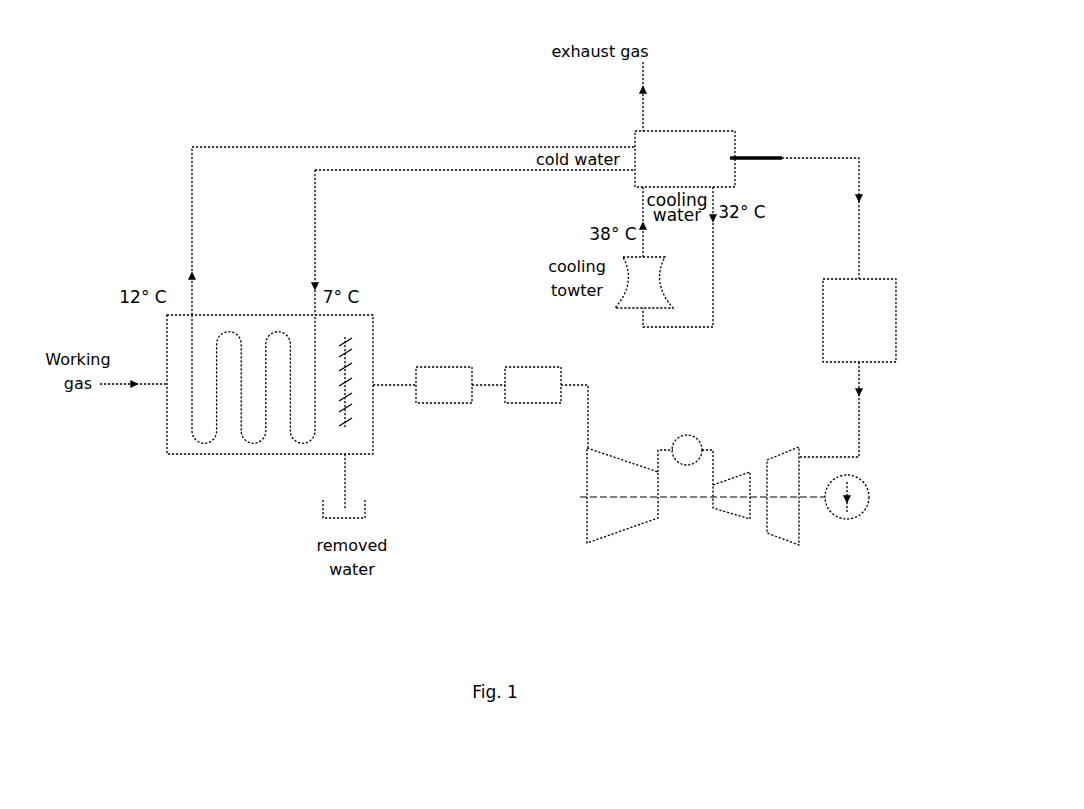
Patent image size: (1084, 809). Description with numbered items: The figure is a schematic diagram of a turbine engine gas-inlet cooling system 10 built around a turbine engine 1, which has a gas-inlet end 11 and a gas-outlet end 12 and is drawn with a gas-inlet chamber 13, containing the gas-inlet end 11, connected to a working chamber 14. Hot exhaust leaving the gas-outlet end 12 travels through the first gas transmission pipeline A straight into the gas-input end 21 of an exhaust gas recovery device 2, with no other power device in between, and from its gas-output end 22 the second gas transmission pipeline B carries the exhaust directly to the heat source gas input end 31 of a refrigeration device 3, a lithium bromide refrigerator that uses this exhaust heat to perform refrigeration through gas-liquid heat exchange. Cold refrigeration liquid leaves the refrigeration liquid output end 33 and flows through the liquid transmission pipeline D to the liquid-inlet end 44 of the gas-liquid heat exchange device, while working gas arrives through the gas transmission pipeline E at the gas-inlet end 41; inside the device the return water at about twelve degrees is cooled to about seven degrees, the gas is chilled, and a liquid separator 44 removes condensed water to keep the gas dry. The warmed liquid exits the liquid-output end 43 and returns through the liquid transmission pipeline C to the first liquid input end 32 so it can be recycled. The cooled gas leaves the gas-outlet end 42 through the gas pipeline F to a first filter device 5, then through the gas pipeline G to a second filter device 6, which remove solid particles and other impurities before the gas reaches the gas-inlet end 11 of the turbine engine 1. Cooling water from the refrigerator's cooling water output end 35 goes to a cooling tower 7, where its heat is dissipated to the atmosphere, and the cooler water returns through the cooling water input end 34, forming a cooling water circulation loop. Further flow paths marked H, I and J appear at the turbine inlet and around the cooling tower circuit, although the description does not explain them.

The turbine engine gas-inlet cooling system 10 is at (120, 61).
The turbine engine 1 is at (691, 550).
The gas-inlet end 11 is at (585, 508).
The gas-outlet end 12 is at (829, 537).
The gas-inlet chamber 13 is at (623, 535).
The working chamber 14 is at (728, 522).
The exhaust gas recovery device 2 is at (896, 303).
The gas-input end 21 is at (882, 362).
The gas-output end 22 is at (873, 275).
The refrigeration device 3 is at (683, 131).
The heat source gas input end 31 is at (735, 131).
The first liquid input end 32 is at (635, 147).
The refrigeration liquid output end 33 is at (630, 172).
The cooling water input end 34 is at (723, 183).
The cooling water output end 35 is at (654, 182).
The gas-inlet end 41 is at (162, 408).
The gas-outlet end 42 is at (378, 418).
The liquid-output end 43 is at (191, 313).
The liquid-inlet end 44 is at (312, 313).
The first filter device 5 is at (431, 367).
The second filter device 6 is at (526, 367).
The cooling tower 7 is at (627, 312).
The first gas transmission pipeline A is at (855, 378).
The second gas transmission pipeline B is at (859, 217).
The liquid transmission pipeline C is at (468, 147).
The liquid transmission pipeline D is at (437, 170).
The gas transmission pipeline E is at (148, 380).
The gas pipeline F is at (391, 384).
The gas pipeline G is at (493, 384).
The state point H is at (587, 410).
The state point I is at (713, 233).
The state point J is at (640, 200).